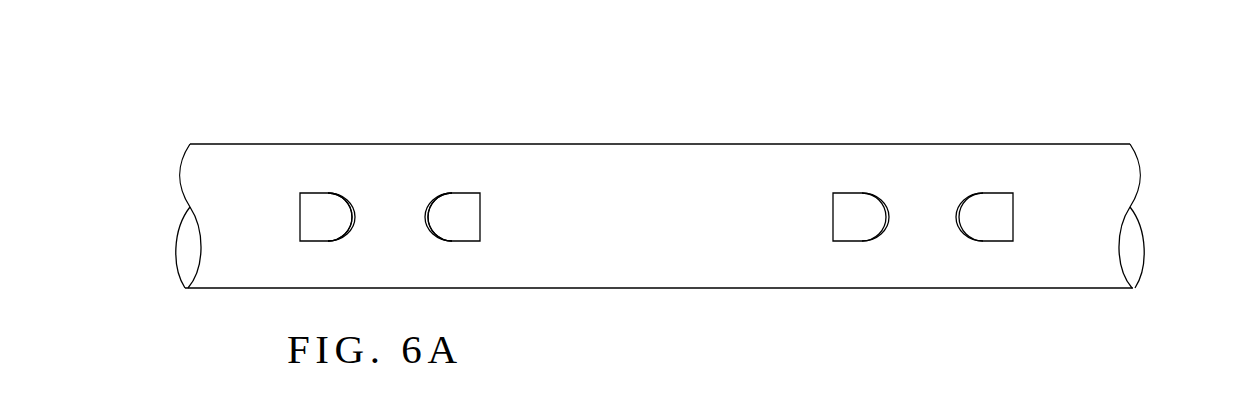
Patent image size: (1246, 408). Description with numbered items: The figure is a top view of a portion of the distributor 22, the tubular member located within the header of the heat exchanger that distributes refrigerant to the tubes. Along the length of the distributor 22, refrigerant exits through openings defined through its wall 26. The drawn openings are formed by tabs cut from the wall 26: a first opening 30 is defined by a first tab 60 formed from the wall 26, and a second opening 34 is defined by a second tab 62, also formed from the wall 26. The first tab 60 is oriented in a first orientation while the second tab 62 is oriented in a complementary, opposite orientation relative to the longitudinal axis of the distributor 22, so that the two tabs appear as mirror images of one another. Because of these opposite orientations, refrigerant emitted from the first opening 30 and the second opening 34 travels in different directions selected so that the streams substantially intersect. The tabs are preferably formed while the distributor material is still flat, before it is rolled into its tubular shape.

The distributor 22 is at (1045, 92).
The wall 26 is at (1090, 158).
The first opening 30 is at (345, 185).
The second opening 34 is at (432, 185).
The first tab 60 is at (322, 200).
The second tab 62 is at (460, 200).